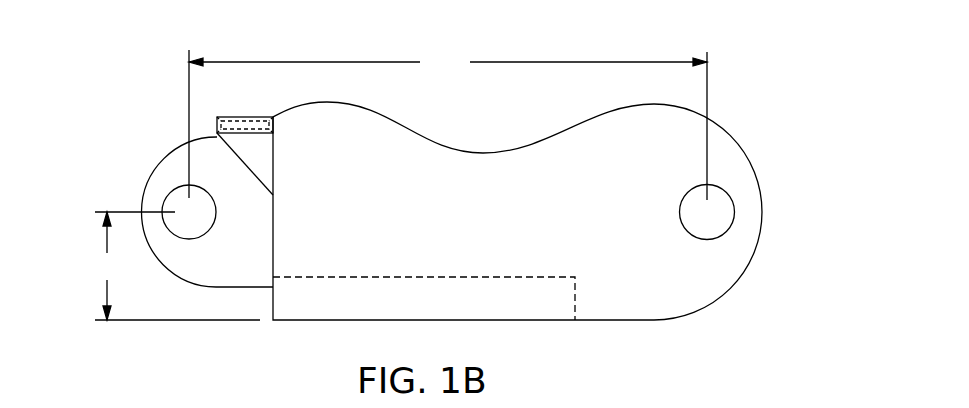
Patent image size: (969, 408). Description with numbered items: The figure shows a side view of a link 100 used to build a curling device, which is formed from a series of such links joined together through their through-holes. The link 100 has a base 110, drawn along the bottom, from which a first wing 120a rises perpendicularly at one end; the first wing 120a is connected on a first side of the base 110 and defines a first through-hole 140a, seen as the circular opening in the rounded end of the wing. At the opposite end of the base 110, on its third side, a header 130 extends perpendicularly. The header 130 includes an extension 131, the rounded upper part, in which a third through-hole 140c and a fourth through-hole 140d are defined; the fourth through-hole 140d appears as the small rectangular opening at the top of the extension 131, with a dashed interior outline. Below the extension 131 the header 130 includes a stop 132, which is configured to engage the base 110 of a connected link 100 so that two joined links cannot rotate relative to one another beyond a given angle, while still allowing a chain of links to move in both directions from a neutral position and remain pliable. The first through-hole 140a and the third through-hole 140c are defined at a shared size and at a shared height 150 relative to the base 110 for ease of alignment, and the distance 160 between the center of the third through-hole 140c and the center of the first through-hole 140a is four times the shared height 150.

The link 100 is at (765, 67).
The base 110 is at (575, 297).
The first wing 120a is at (652, 275).
The header 130 is at (273, 252).
The extension 131 is at (160, 268).
The stop 132 is at (273, 295).
The first through-hole 140a is at (723, 215).
The third through-hole 140c is at (177, 195).
The fourth through-hole 140d is at (213, 127).
The shared height 150 is at (448, 125).
The distance 160 is at (174, 266).